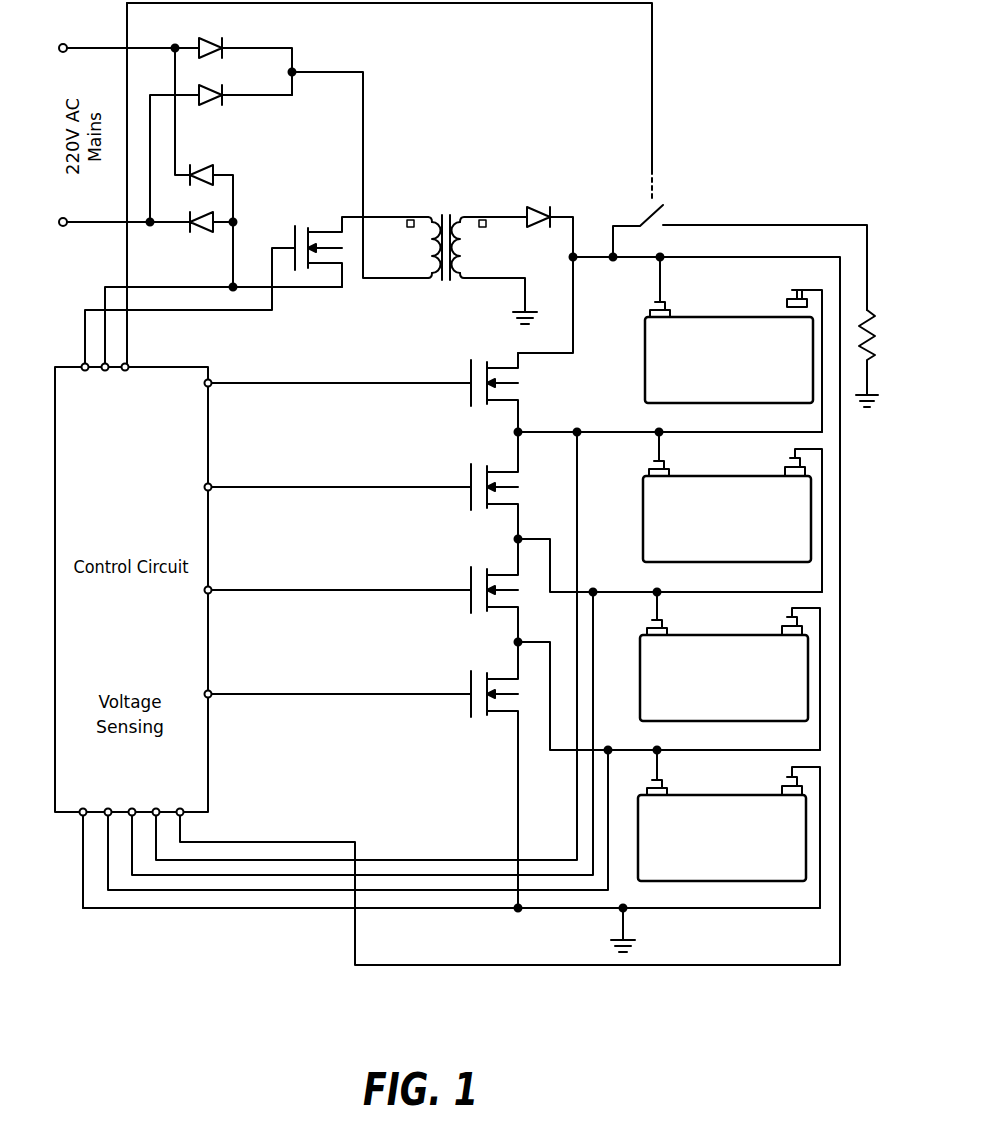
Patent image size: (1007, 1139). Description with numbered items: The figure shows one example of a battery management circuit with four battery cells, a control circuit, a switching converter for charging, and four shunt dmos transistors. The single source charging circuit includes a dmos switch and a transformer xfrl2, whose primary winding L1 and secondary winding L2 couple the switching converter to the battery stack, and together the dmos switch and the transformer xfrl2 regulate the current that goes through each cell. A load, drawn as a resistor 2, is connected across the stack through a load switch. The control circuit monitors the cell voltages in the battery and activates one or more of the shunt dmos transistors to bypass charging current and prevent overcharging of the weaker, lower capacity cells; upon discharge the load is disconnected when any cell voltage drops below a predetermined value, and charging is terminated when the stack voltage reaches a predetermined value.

The load resistor 2 is at (862, 358).
The transformer primary winding L1 is at (411, 235).
The transformer secondary winding L2 is at (494, 258).
The transformer xfrl2 is at (459, 249).